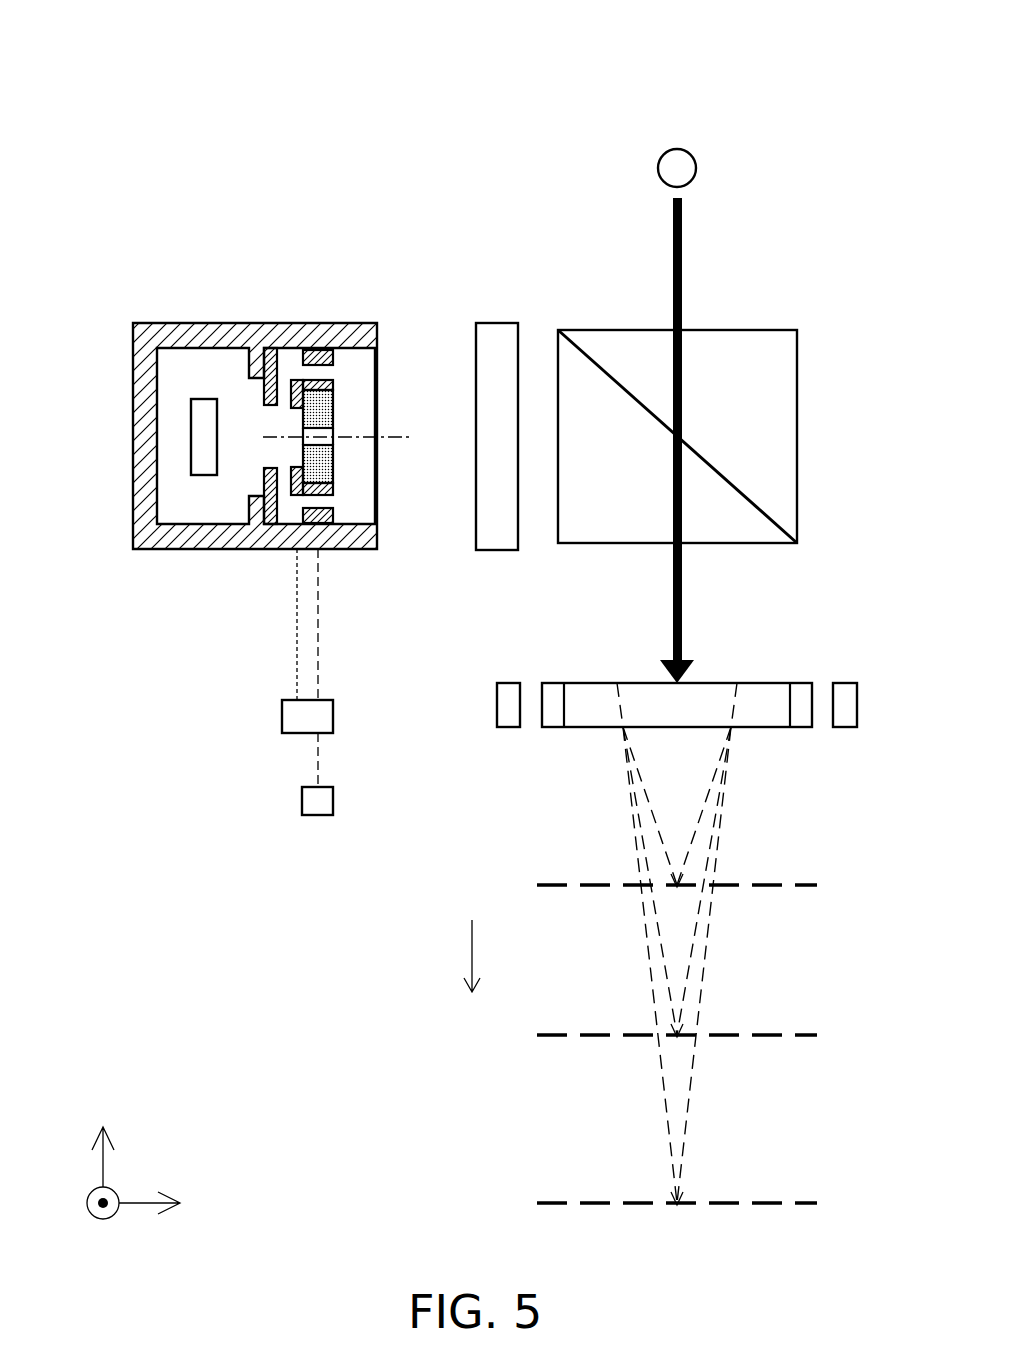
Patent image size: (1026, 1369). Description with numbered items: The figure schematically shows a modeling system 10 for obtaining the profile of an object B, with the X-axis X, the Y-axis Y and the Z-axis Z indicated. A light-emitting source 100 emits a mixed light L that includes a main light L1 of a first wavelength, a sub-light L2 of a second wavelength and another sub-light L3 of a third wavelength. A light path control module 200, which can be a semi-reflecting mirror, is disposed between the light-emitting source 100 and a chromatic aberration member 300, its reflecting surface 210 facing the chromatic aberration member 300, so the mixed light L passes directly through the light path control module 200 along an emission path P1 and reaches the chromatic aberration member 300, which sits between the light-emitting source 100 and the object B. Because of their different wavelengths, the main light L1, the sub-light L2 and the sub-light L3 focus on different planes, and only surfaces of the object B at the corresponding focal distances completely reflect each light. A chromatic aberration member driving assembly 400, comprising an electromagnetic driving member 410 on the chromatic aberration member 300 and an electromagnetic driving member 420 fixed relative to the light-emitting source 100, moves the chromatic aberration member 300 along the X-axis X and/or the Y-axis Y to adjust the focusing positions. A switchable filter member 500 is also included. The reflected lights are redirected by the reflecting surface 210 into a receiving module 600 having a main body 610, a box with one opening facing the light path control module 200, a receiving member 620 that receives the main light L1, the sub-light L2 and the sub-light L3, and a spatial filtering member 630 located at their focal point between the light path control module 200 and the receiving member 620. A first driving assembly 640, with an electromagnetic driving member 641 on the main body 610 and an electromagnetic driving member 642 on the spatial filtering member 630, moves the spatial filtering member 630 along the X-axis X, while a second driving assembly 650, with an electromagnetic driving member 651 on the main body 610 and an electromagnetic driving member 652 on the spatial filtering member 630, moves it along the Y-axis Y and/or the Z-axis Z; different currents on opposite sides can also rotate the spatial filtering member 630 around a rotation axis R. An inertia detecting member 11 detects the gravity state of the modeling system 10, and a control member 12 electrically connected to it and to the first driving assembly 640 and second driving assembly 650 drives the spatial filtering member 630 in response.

The modeling system 10 is at (115, 62).
The inertia detecting member 11 is at (302, 800).
The control member 12 is at (282, 720).
The light-emitting source 100 is at (693, 153).
The light path control module 200 is at (723, 469).
The reflecting surface 210 is at (727, 483).
The chromatic aberration member 300 is at (763, 703).
The chromatic aberration member driving assembly 400 is at (898, 791).
The electromagnetic driving member 410 is at (553, 715).
The electromagnetic driving member 420 is at (505, 715).
The switchable filter member 500 is at (495, 322).
The receiving module 600 is at (128, 326).
The main body 610 is at (150, 370).
The receiving member 620 is at (203, 437).
The spatial filtering member 630 is at (320, 408).
The first driving assembly 640 is at (385, 258).
The electromagnetic driving member 641 is at (320, 350).
The electromagnetic driving member 642 is at (310, 380).
The second driving assembly 650 is at (250, 616).
The electromagnetic driving member 651 is at (266, 349).
The electromagnetic driving member 652 is at (295, 380).
The mixed light L is at (683, 282).
The rotation axis R is at (347, 438).
The main light L1 is at (665, 848).
The sub-light L2 is at (665, 988).
The sub-light L3 is at (672, 1155).
The object B is at (715, 1043).
The emission path P1 is at (472, 941).
The X-axis X is at (165, 1206).
The Y-axis Y is at (103, 1143).
The Z-axis Z is at (94, 1216).